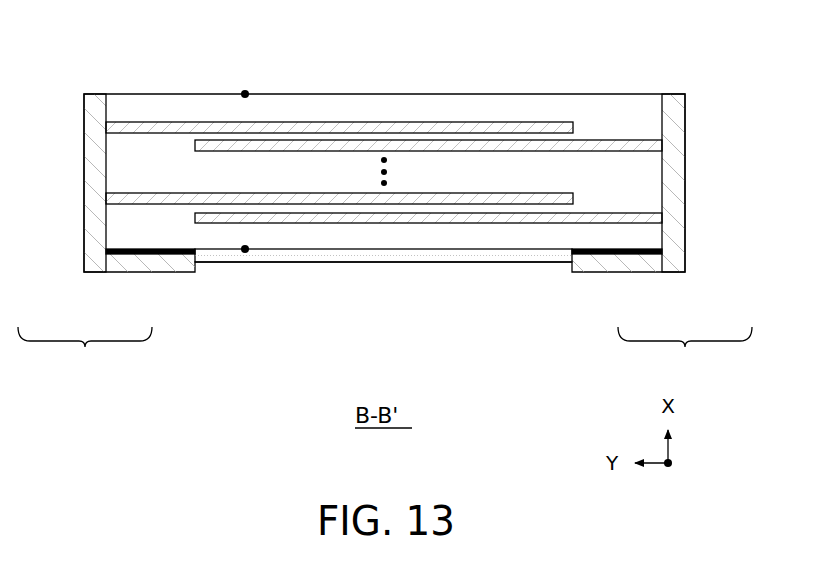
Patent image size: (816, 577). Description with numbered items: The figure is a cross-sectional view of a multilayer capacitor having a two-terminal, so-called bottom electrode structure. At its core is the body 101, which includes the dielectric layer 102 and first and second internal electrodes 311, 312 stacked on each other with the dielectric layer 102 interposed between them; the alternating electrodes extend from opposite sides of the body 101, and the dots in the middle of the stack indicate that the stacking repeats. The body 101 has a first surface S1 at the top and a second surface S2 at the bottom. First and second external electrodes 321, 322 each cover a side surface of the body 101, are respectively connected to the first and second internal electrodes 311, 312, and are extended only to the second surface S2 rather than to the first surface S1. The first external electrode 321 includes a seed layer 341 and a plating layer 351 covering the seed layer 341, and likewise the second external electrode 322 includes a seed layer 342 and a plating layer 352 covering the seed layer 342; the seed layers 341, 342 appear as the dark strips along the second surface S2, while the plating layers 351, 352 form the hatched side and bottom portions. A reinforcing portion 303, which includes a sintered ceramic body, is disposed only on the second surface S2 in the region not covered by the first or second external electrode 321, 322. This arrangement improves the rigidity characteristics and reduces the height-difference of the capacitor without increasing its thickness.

The body 101 is at (477, 88).
The dielectric layer 102 is at (299, 133).
The first internal electrode 311 is at (364, 127).
The second internal electrode 312 is at (434, 145).
The reinforcing portion 303 is at (367, 256).
The first external electrode 321 is at (85, 349).
The second external electrode 322 is at (685, 349).
The seed layer 341 is at (147, 256).
The seed layer 342 is at (620, 256).
The plating layer 351 is at (92, 203).
The plating layer 352 is at (677, 203).
The first surface S1 is at (245, 91).
The second surface S2 is at (245, 253).